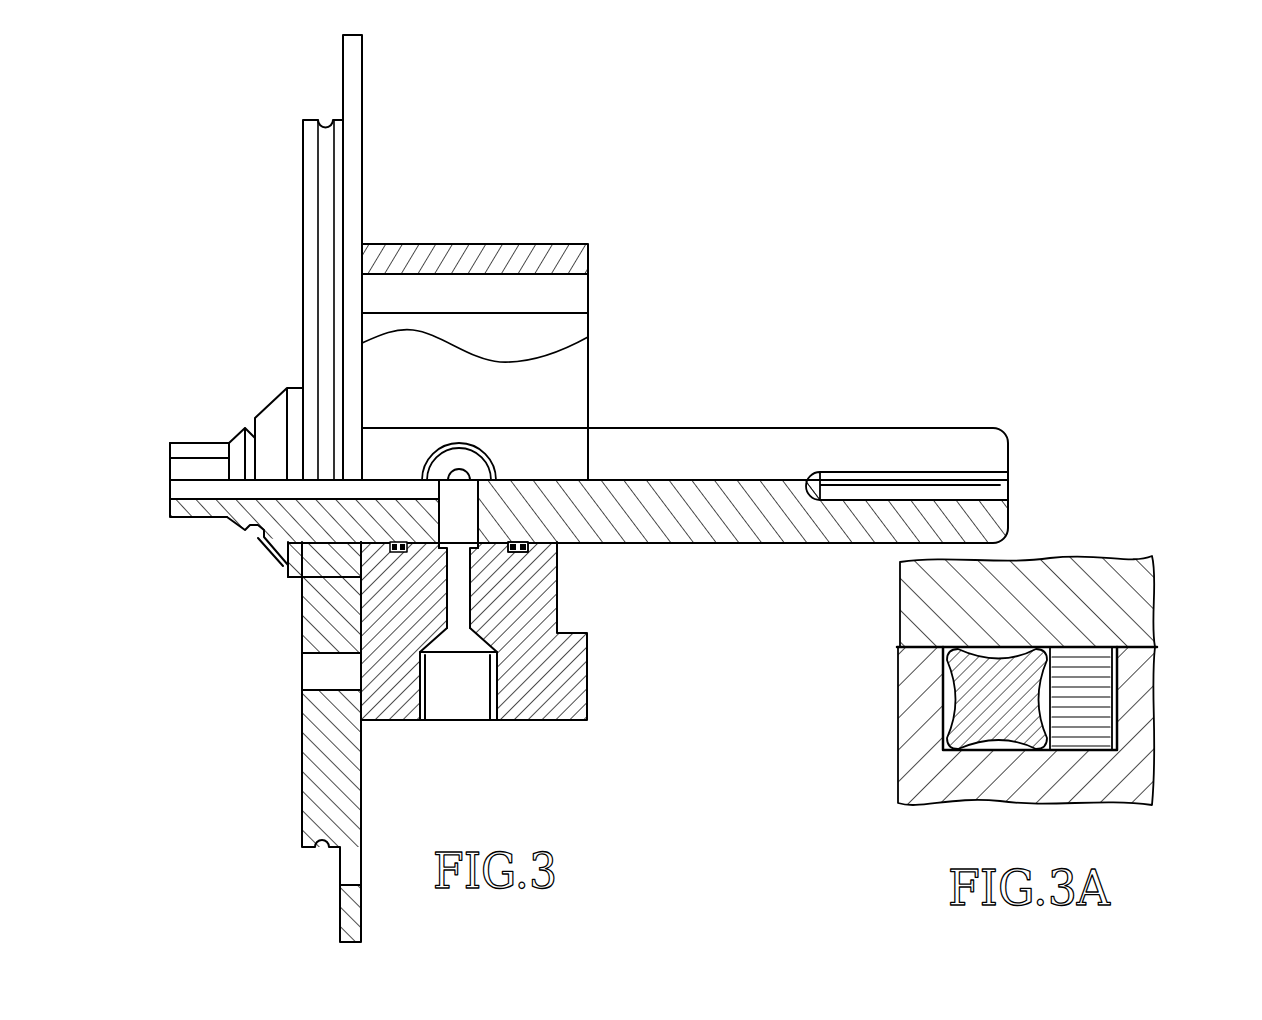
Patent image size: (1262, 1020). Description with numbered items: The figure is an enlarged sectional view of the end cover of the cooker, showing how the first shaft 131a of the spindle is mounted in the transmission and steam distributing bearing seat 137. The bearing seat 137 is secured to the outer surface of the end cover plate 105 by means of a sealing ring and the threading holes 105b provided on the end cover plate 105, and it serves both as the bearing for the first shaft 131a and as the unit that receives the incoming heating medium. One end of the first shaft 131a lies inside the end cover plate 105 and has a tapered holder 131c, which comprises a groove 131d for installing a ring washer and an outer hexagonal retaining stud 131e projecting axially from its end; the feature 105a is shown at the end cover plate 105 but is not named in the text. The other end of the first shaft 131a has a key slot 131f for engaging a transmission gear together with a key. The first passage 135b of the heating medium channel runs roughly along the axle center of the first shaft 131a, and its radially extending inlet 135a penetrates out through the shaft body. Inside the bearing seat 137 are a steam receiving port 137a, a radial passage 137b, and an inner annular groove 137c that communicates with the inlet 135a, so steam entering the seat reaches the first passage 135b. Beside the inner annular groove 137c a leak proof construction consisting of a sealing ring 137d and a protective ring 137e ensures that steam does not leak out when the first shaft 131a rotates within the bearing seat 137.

In FIG. 3, the end cover plate 105 is at (363, 77).
In FIG. 3, the groove of shaft 105a is at (325, 120).
In FIG. 3, the threading holes 105b is at (301, 676).
In FIG. 3, the first shaft 131a is at (673, 532).
In FIG. 3A, the first shaft 131a is at (1137, 603).
In FIG. 3, the tapered holder 131c is at (263, 411).
In FIG. 3, the groove 131d is at (253, 537).
In FIG. 3, the outer hexagonal retaining stud 131e is at (170, 457).
In FIG. 3, the key slot 131f is at (1000, 478).
In FIG. 3, the radially extending inlet 135a is at (458, 548).
In FIG. 3, the first passage 135b is at (172, 489).
In FIG. 3, the transmission and steam distributing bearing seat 137 is at (587, 683).
In FIG. 3A, the transmission and steam distributing bearing seat 137 is at (1143, 777).
In FIG. 3, the steam receiving port 137a is at (443, 703).
In FIG. 3, the radial passage 137b is at (460, 612).
In FIG. 3, the inner annular groove 137c is at (457, 510).
In FIG. 3, the sealing ring 137d is at (528, 548).
In FIG. 3A, the sealing ring 137d is at (980, 737).
In FIG. 3, the protective ring 137e is at (530, 552).
In FIG. 3A, the protective ring 137e is at (1100, 698).